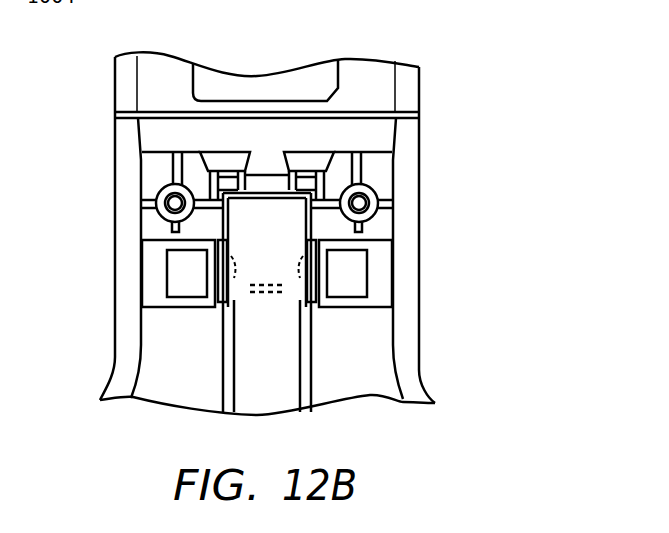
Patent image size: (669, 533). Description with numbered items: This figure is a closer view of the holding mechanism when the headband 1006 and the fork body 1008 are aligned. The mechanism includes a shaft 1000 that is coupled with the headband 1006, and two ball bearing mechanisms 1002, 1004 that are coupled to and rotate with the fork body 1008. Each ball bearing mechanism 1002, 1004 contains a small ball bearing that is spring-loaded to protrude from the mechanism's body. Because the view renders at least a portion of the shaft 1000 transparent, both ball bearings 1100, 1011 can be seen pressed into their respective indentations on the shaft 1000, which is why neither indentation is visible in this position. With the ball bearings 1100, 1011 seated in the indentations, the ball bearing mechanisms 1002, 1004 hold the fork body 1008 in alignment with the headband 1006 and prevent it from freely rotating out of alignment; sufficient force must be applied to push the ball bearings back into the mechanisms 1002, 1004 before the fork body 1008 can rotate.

The shaft 1000 is at (283, 218).
The ball bearing mechanism 1002 is at (188, 270).
The ball bearing mechanism 1004 is at (343, 277).
The headband 1006 is at (358, 52).
The fork body 1008 is at (142, 410).
The ball bearing 1011 is at (228, 272).
The ball bearing 1100 is at (306, 272).